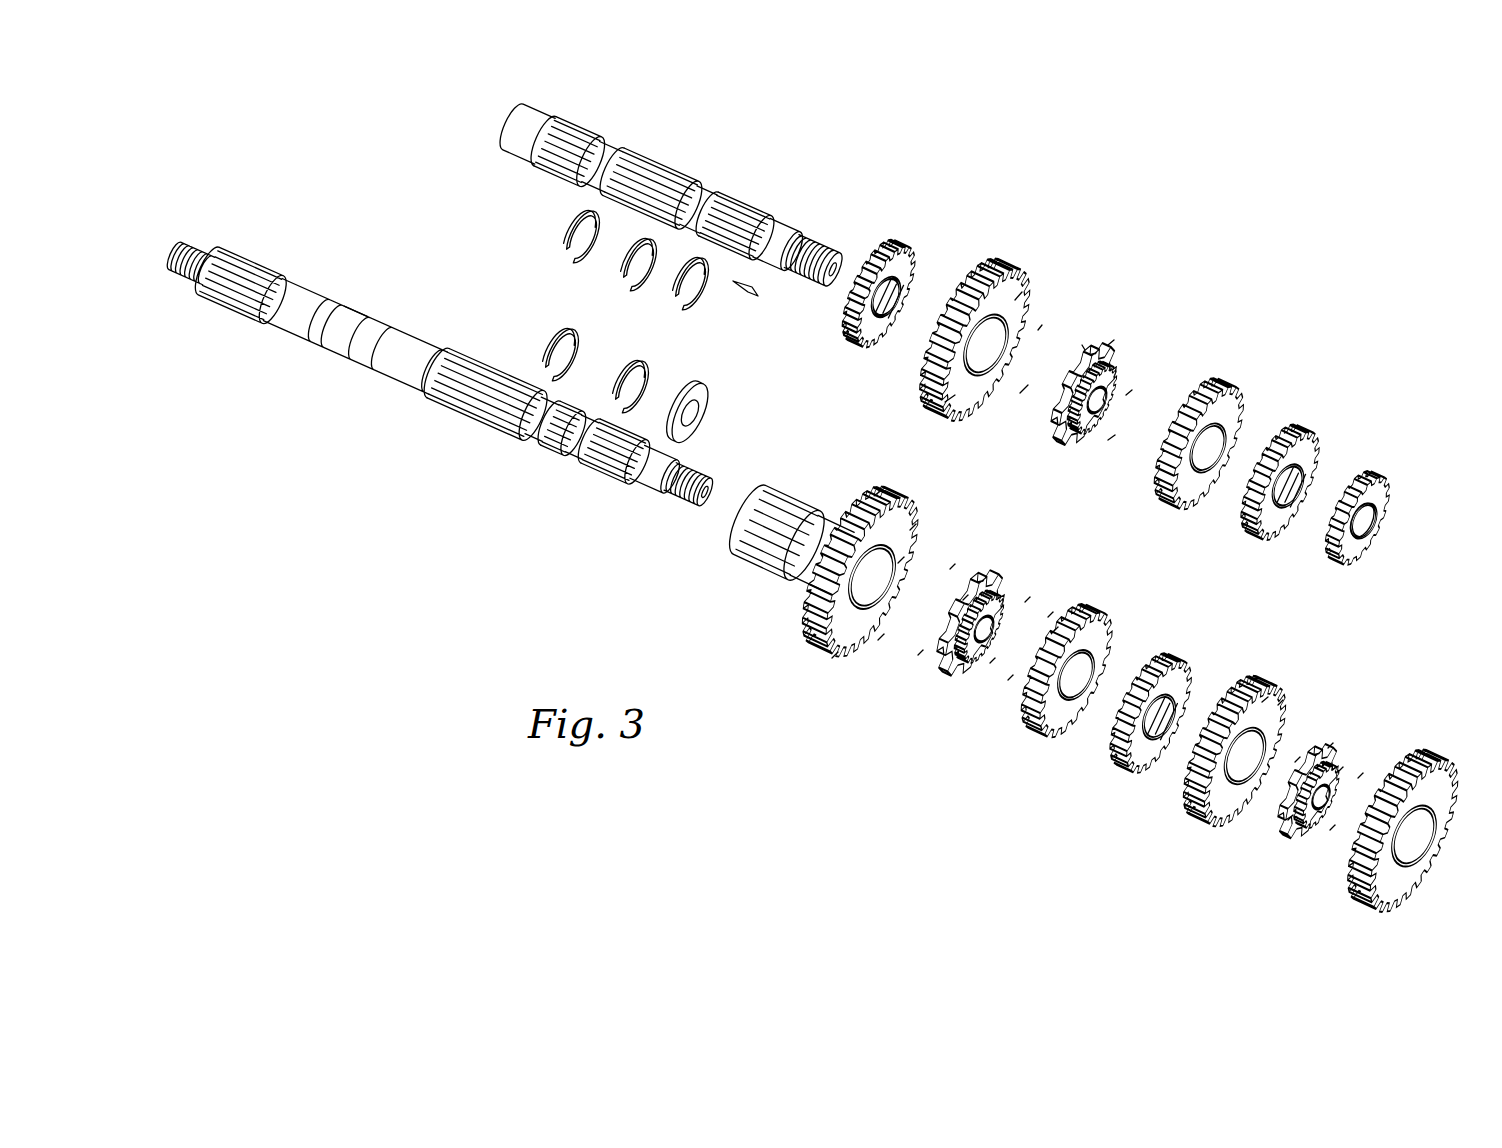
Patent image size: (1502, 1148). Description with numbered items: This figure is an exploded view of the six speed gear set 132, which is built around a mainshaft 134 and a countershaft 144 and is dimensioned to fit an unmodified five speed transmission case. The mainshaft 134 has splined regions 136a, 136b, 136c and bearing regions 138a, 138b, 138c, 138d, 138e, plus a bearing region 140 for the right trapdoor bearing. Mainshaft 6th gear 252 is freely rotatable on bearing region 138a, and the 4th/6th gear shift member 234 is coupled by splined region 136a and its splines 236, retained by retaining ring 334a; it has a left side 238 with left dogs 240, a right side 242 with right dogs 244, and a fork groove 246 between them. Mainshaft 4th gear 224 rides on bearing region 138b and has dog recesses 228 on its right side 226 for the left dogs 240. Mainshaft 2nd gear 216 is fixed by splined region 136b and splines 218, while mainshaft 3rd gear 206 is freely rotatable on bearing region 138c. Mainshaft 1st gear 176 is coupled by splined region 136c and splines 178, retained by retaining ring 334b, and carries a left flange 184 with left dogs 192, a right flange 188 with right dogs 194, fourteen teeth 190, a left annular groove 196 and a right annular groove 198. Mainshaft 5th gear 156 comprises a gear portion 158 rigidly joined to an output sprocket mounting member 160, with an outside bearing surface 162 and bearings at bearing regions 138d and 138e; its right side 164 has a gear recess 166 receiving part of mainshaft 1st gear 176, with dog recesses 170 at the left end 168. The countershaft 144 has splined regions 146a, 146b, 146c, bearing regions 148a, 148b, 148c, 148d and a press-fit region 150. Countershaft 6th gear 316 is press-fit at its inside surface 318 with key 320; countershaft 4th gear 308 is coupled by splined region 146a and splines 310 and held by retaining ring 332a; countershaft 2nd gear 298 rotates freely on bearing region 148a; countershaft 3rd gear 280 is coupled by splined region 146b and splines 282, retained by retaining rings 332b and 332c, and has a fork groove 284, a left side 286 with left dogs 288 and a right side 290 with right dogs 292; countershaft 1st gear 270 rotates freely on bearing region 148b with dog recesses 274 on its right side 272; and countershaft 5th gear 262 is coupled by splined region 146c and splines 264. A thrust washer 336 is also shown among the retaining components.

The six speed gear set 132 is at (1035, 162).
The mainshaft 134 is at (295, 352).
The splined region 136a is at (600, 480).
The splined region 136b is at (548, 458).
The splined region 136c is at (480, 415).
The bearing region 138a is at (632, 505).
The bearing region 138b is at (568, 462).
The bearing region 138c is at (530, 430).
The bearing region 138d is at (447, 305).
The bearing region 138e is at (350, 360).
The bearing region 140 is at (655, 500).
The countershaft 144 is at (540, 102).
The splined region 146a is at (735, 192).
The splined region 146b is at (667, 160).
The splined region 146c is at (580, 126).
The bearing region 148a is at (693, 187).
The bearing region 148b is at (610, 150).
The bearing region 148c is at (517, 150).
The bearing region 148d is at (793, 247).
The press-fit region 150 is at (770, 225).
The mainshaft 5th gear 156 is at (805, 650).
The gear portion 158 is at (877, 492).
The output sprocket mounting member 160 is at (758, 563).
The outside bearing surface 162 is at (820, 518).
The right side 164 is at (835, 655).
The gear recess 166 is at (900, 560).
The left end 168 is at (880, 637).
The dog recesses 170 is at (913, 527).
The mainshaft 1st gear 176 is at (943, 675).
The splines 178 is at (1010, 677).
The left flange 184 is at (965, 600).
The right flange 188 is at (1050, 615).
The teeth 190 is at (1027, 600).
The left dogs 192 is at (953, 567).
The right dogs 194 is at (1055, 630).
The left annular groove 196 is at (920, 652).
The right annular groove 198 is at (993, 660).
The mainshaft 3rd gear 206 is at (1033, 737).
The mainshaft 2nd gear 216 is at (1123, 765).
The splines 218 is at (1165, 750).
The mainshaft 4th gear 224 is at (1200, 812).
The right side 226 is at (1265, 700).
The dog recesses 228 is at (1280, 702).
The 4th/6th gear shift member 234 is at (1287, 840).
The splines 236 is at (1333, 827).
The left side 238 is at (1330, 745).
The left dogs 240 is at (1297, 758).
The right side 242 is at (1340, 770).
The right dogs 244 is at (1360, 775).
The fork groove 246 is at (1290, 817).
The mainshaft 6th gear 252 is at (1368, 905).
The countershaft 5th gear 262 is at (885, 240).
The splines 264 is at (886, 332).
The countershaft 1st gear 270 is at (1008, 255).
The right side 272 is at (950, 403).
The dog recesses 274 is at (1025, 290).
The countershaft 3rd gear 280 is at (1135, 345).
The splines 282 is at (1112, 440).
The fork groove 284 is at (1082, 346).
The left side 286 is at (1023, 390).
The left dogs 288 is at (1040, 325).
The right side 290 is at (1110, 343).
The right dogs 292 is at (1130, 393).
The countershaft 2nd gear 298 is at (1237, 385).
The countershaft 4th gear 308 is at (1305, 437).
The splines 310 is at (1290, 525).
The countershaft 6th gear 316 is at (1366, 468).
The inside surface 318 is at (1365, 558).
The key 320 is at (748, 298).
The retaining ring 332a is at (697, 312).
The retaining ring 332b is at (620, 290).
The retaining ring 332c is at (565, 235).
The retaining ring 334a is at (630, 358).
The retaining ring 334b is at (560, 328).
The thrust washer 336 is at (712, 395).